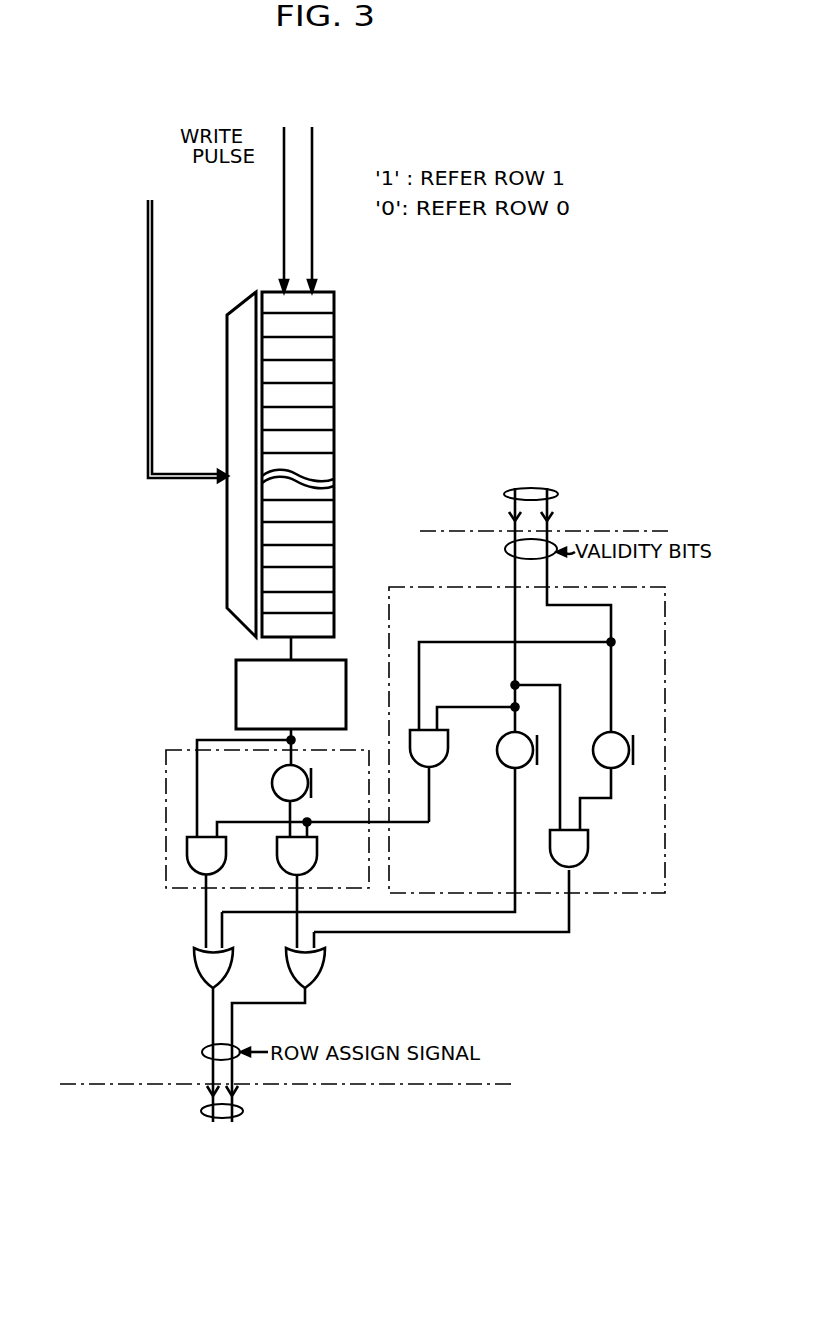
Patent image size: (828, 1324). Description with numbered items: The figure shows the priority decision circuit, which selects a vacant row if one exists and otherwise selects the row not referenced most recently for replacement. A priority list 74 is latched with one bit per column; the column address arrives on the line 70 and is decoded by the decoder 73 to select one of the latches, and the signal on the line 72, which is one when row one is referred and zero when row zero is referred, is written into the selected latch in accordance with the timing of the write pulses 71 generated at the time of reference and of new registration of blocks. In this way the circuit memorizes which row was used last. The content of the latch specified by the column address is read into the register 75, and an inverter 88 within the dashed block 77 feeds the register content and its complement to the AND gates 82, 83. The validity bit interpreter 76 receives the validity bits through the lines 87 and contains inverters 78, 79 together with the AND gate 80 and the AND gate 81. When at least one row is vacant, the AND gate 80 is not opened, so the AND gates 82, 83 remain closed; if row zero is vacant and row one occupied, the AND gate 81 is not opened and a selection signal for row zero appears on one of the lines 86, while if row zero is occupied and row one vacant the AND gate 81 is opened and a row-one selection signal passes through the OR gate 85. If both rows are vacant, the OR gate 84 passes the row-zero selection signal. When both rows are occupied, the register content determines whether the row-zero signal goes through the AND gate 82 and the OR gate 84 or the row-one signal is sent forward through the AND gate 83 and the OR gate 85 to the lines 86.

The line 70 is at (152, 266).
The write pulses 71 is at (284, 178).
The line 72 is at (312, 178).
The decoder 73 is at (227, 412).
The priority list 74 is at (334, 356).
The register 75 is at (236, 675).
The validity bit interpreter 76 is at (592, 893).
The logic circuit block 77 is at (166, 793).
The inverter 78 is at (613, 770).
The inverter 79 is at (517, 770).
The AND gate 80 is at (441, 768).
The AND gate 81 is at (588, 862).
The AND gate 82 is at (226, 866).
The AND gate 83 is at (317, 866).
The OR gate 84 is at (194, 962).
The OR gate 85 is at (325, 962).
The lines 86 is at (243, 1110).
The lines 87 is at (558, 494).
The inverter 88 is at (272, 787).